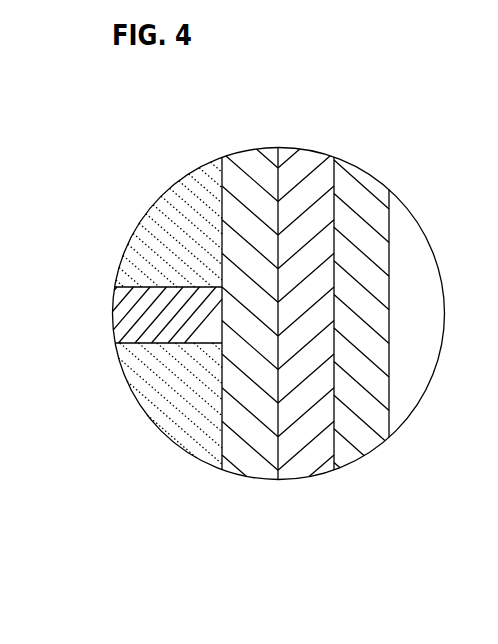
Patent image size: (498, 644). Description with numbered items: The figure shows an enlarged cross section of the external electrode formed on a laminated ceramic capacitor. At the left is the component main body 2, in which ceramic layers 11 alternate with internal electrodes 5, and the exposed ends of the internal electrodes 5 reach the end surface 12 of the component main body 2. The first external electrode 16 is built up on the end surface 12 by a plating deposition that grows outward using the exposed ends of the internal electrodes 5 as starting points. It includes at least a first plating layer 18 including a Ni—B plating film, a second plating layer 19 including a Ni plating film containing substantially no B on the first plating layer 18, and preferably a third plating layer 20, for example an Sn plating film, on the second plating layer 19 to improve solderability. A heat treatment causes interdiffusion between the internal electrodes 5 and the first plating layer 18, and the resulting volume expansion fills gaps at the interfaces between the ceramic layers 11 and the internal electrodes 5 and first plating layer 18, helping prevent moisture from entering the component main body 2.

The component main body 2 is at (160, 191).
The internal electrodes 5 is at (123, 315).
The ceramic layers 11 is at (145, 230).
The end surface 12 is at (226, 208).
The first external electrode 16 is at (305, 378).
The first plating layer 18 is at (262, 472).
The second plating layer 19 is at (313, 470).
The third plating layer 20 is at (361, 356).